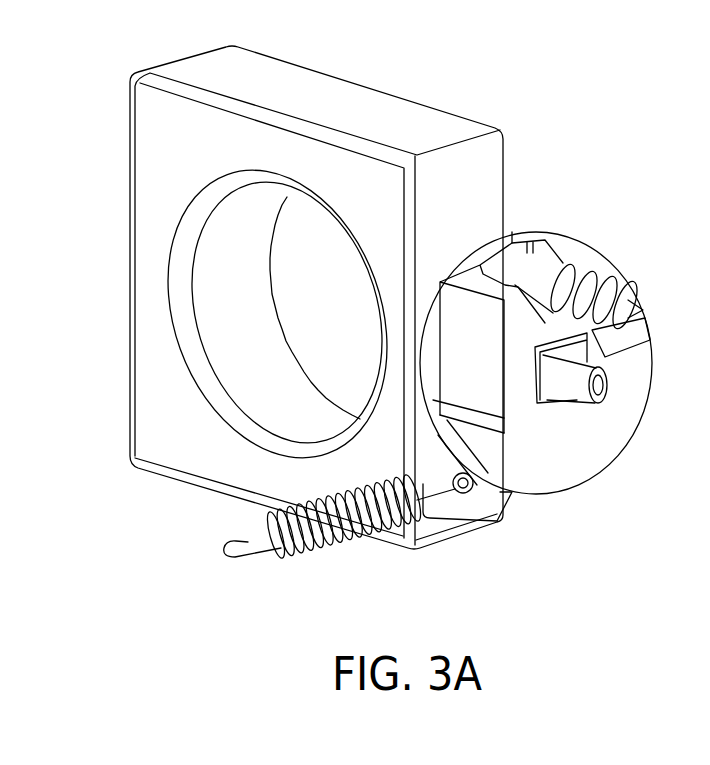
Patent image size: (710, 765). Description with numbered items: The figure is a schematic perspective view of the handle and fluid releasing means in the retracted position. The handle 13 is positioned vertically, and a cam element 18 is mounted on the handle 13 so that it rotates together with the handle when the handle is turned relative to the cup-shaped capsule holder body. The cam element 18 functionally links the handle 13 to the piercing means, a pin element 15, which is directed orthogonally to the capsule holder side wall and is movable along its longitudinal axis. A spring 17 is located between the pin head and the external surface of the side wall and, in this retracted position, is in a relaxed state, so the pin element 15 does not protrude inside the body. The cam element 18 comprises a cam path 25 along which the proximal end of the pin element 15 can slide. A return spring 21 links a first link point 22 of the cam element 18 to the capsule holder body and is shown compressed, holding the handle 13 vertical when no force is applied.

The handle 13 is at (415, 112).
The pin element 15 is at (552, 265).
The spring 17 is at (632, 280).
The cam element 18 is at (537, 235).
The return spring 21 is at (343, 547).
The first link point 22 is at (470, 500).
The cam path 25 is at (620, 338).